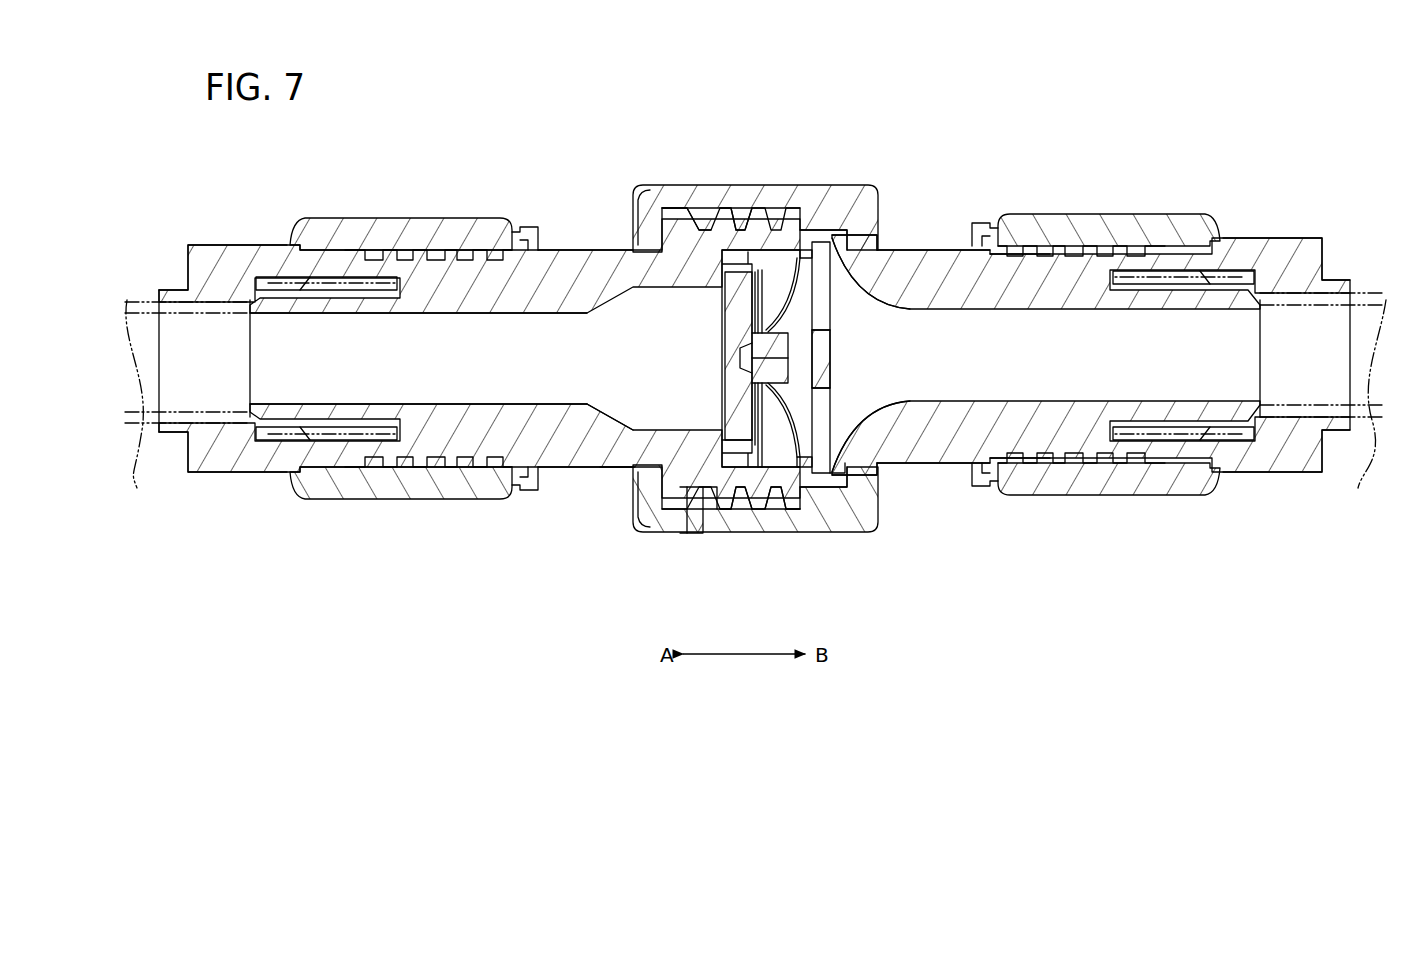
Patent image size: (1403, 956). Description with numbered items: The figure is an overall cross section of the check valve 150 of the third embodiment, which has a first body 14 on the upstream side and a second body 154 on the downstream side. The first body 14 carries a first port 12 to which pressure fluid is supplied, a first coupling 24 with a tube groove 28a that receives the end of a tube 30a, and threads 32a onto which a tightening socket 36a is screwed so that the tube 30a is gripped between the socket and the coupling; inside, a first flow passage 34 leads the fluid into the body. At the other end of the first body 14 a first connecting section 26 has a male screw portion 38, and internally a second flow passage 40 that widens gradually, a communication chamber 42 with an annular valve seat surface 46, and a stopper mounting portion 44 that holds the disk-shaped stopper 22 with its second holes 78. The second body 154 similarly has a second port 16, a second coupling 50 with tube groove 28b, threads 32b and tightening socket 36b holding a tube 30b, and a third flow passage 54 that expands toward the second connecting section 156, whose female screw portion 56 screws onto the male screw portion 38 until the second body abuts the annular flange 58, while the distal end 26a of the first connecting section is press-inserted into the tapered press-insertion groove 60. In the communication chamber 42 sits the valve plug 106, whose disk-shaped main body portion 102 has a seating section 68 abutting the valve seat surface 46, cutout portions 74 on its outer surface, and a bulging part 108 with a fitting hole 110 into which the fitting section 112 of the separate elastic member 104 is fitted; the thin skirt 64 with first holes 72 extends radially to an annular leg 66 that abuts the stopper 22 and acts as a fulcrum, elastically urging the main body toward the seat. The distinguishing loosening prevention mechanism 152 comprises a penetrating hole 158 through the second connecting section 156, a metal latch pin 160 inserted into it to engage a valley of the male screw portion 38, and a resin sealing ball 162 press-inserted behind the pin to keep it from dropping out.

The first port 12 is at (283, 316).
The first body 14 is at (570, 236).
The second port 16 is at (1193, 315).
The stopper 22 is at (834, 345).
The first coupling 24 is at (344, 264).
The first connecting section 26 is at (680, 242).
The distal end of the first connecting section 26a is at (843, 232).
The tube groove 28a is at (352, 442).
The tube groove 28b is at (1140, 444).
The tube 30a is at (187, 407).
The tube 30b is at (1325, 400).
The threads 32a is at (412, 242).
The threads 32b is at (1088, 240).
The first flow passage 34 is at (466, 382).
The tightening socket 36a is at (228, 482).
The tightening socket 36b is at (1279, 486).
The male screw portion 38 is at (740, 497).
The second flow passage 40 is at (607, 442).
The communication chamber 42 is at (790, 477).
The stopper mounting portion 44 is at (842, 465).
The valve seat surface 46 is at (747, 258).
The second coupling 50 is at (1067, 444).
The third flow passage 54 is at (980, 388).
The female screw portion 56 is at (657, 495).
The annular flange 58 is at (641, 190).
The press-insertion groove 60 is at (803, 250).
The skirt 64 is at (880, 430).
The leg 66 is at (823, 470).
The seating section 68 is at (720, 444).
The first holes 72 is at (842, 257).
The cutout portions 74 is at (797, 256).
The second holes 78 is at (835, 298).
The main body portion 102 is at (748, 352).
The elastic member 104 is at (802, 410).
The valve plug 106 is at (718, 318).
The bulging part 108 is at (762, 460).
The fitting hole 110 is at (752, 380).
The fitting section 112 is at (831, 368).
The check valve 150 is at (1073, 123).
The loosening prevention mechanism 152 is at (693, 540).
The second body 154 is at (958, 222).
The second connecting section 156 is at (763, 192).
The penetrating hole 158 is at (686, 507).
The latch pin 160 is at (735, 518).
The sealing ball 162 is at (686, 525).